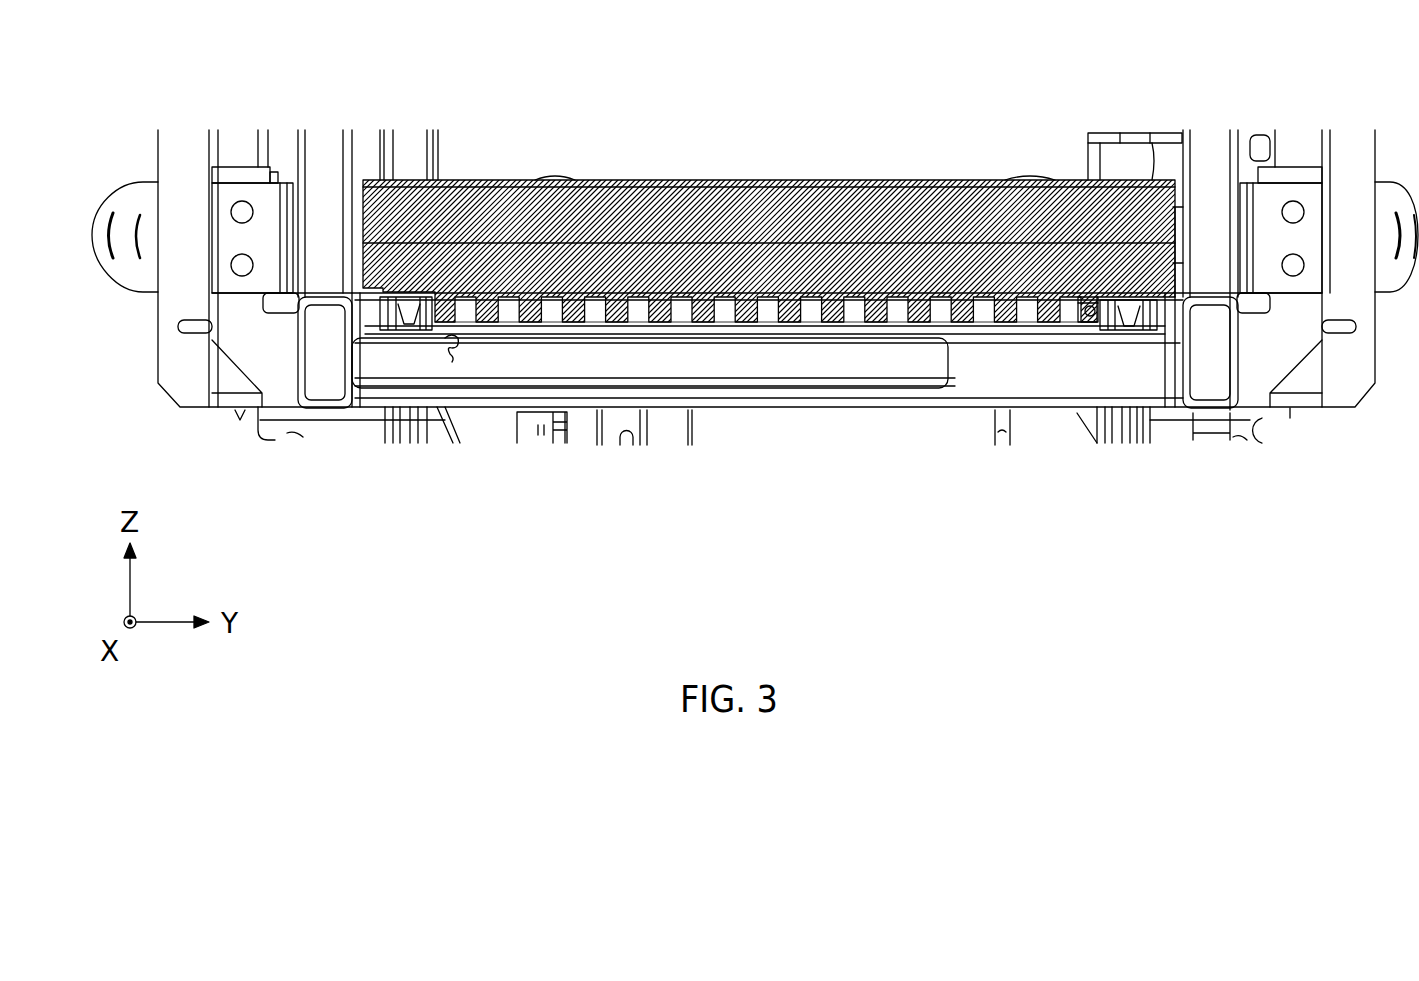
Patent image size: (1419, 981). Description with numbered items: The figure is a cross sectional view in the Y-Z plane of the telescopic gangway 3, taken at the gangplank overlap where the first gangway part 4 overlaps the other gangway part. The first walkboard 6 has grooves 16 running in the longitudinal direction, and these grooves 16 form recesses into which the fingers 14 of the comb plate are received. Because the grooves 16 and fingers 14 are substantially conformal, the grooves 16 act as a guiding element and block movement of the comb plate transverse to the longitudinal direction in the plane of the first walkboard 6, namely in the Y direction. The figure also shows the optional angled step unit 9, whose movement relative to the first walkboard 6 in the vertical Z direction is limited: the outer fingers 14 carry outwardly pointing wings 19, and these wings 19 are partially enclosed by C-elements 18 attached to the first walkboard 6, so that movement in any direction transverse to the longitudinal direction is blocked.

The telescopic gangway 3 is at (755, 282).
The first gangway part 4 is at (1278, 437).
The first walkboard 6 is at (533, 356).
The angled step unit 9 is at (613, 214).
The fingers 14 is at (853, 308).
The grooves 16 is at (758, 345).
The C-elements 18 is at (1103, 284).
The wings 19 is at (1089, 326).